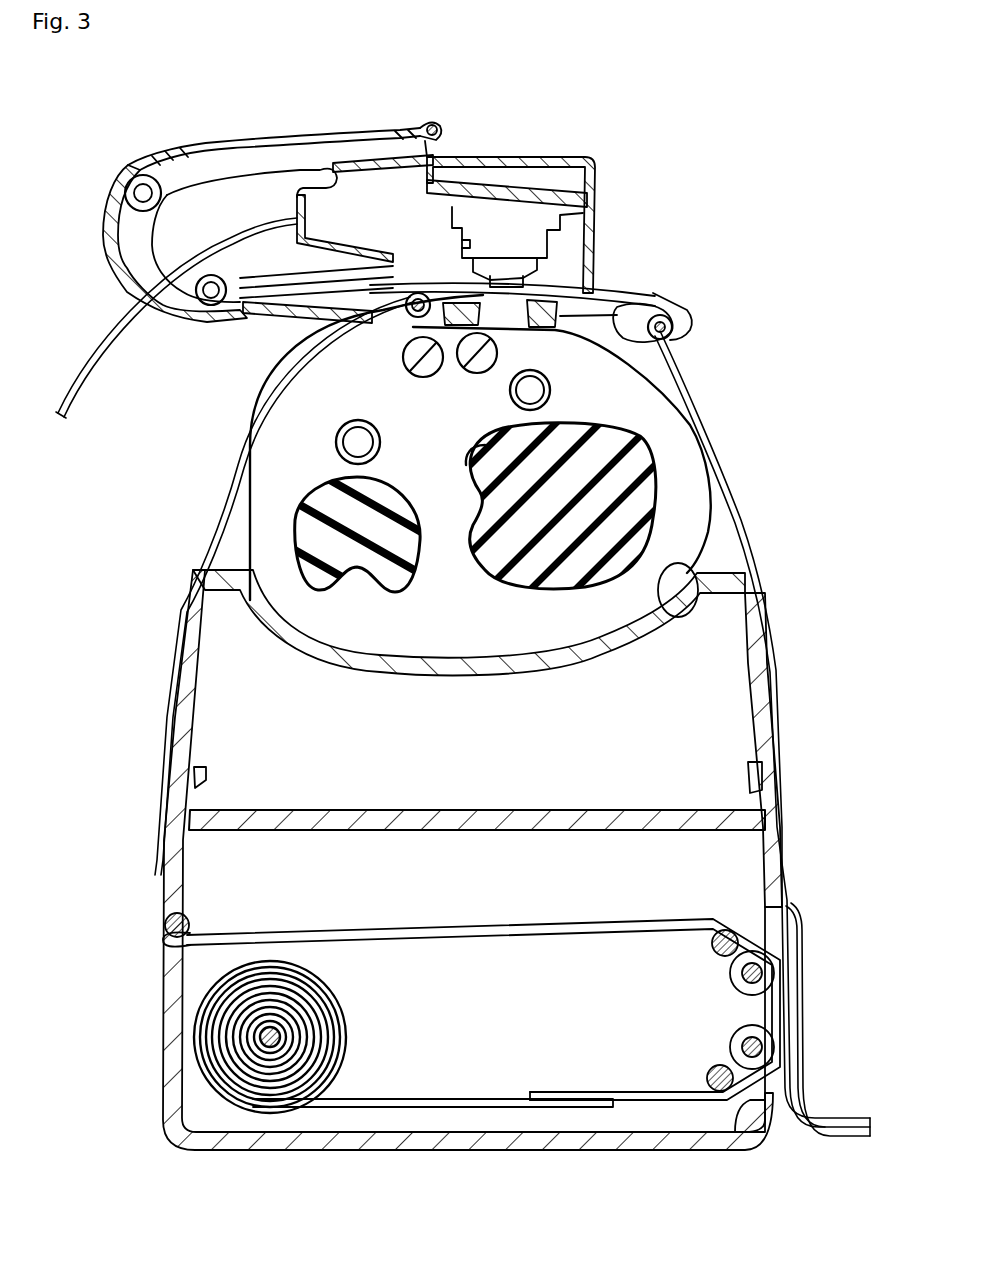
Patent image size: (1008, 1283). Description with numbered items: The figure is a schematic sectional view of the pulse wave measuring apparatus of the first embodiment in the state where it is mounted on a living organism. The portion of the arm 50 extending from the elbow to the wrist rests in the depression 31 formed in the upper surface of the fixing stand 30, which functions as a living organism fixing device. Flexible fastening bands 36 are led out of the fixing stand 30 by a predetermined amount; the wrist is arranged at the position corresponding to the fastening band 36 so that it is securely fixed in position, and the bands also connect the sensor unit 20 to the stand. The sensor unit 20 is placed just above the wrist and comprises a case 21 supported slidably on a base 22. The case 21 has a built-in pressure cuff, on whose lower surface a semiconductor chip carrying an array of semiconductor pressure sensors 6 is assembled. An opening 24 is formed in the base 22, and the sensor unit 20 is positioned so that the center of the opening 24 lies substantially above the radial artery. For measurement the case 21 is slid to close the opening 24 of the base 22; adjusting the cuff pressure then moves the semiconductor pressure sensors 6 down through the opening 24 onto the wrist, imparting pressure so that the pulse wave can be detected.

The semiconductor pressure sensor 6 is at (507, 277).
The sensor unit 20 is at (342, 105).
The case 21 is at (425, 223).
The base 22 is at (278, 310).
The opening 24 is at (605, 323).
The fixing stand 30 is at (773, 651).
The depression 31 is at (672, 580).
The fastening band 36 is at (202, 531).
The arm 50 is at (653, 427).